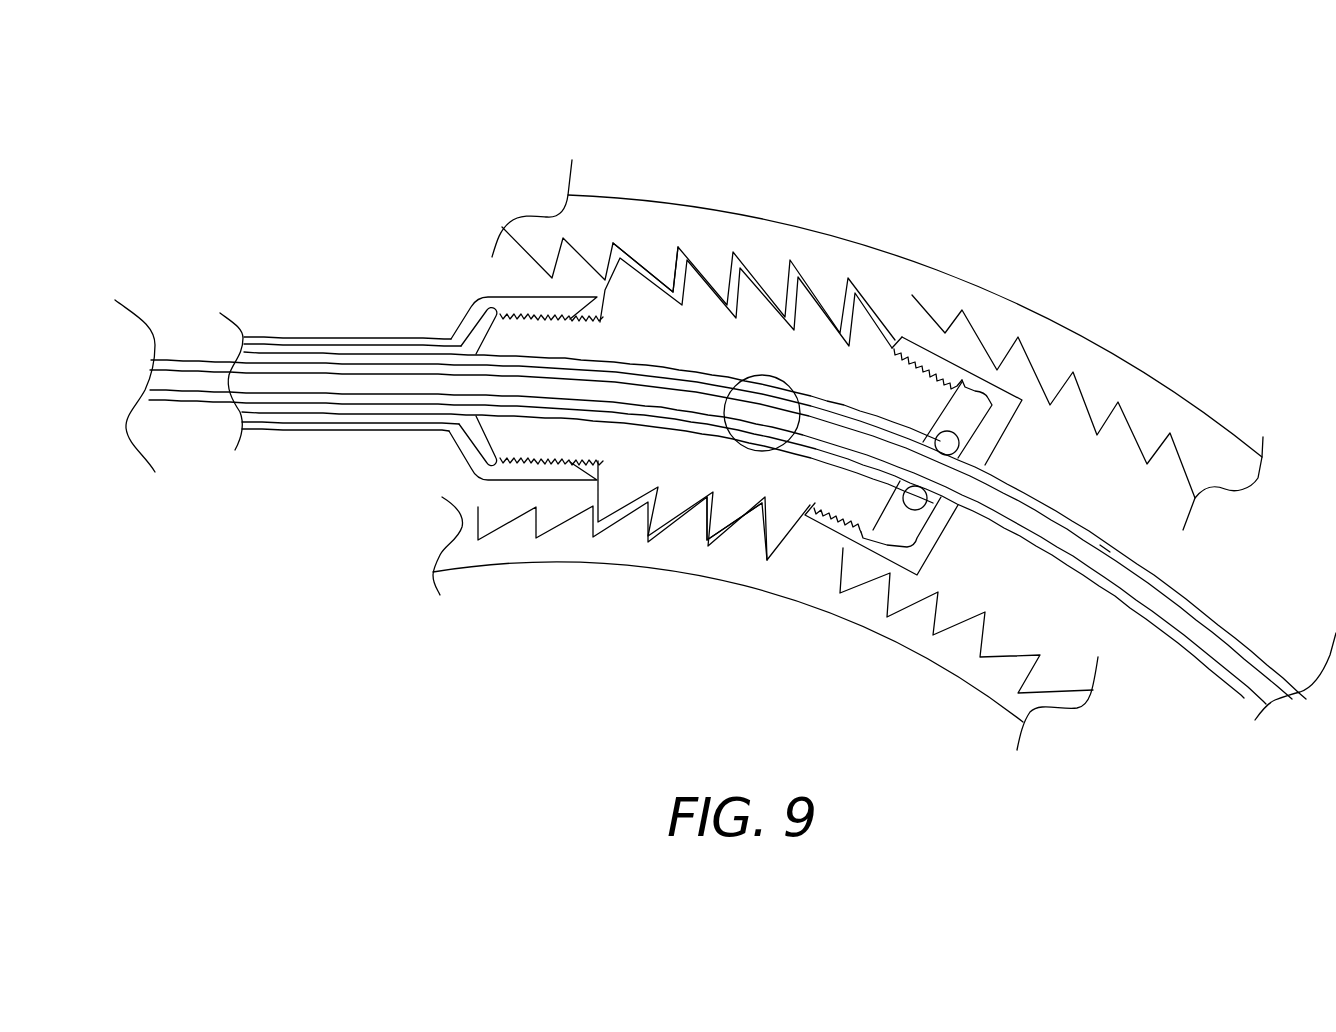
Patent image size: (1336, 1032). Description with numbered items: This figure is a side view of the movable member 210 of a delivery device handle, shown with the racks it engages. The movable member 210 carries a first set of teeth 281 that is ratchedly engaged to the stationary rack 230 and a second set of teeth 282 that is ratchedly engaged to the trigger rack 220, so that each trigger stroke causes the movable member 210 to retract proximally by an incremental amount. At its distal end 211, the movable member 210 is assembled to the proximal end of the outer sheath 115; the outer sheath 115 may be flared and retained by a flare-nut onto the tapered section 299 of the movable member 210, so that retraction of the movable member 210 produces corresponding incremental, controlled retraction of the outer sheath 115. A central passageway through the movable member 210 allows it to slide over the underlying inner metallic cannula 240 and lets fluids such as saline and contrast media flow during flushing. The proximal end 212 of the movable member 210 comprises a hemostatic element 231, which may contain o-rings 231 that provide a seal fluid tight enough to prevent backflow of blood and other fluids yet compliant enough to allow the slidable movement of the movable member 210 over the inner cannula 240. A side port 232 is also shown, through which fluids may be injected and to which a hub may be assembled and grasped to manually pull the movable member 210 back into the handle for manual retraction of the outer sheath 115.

The outer sheath 115 is at (315, 340).
The tapered section 299 is at (468, 334).
The distal end of the movable member 211 is at (462, 434).
The movable member 210 is at (677, 240).
The first set of teeth 281 is at (683, 268).
The stationary rack 230 is at (882, 296).
The trigger rack 220 is at (854, 592).
The proximal end of the movable member 212 is at (996, 556).
The second set of teeth 282 is at (736, 527).
The side port 232 is at (764, 405).
The hemostatic element 231 is at (949, 444).
The inner metallic cannula 240 is at (1195, 611).